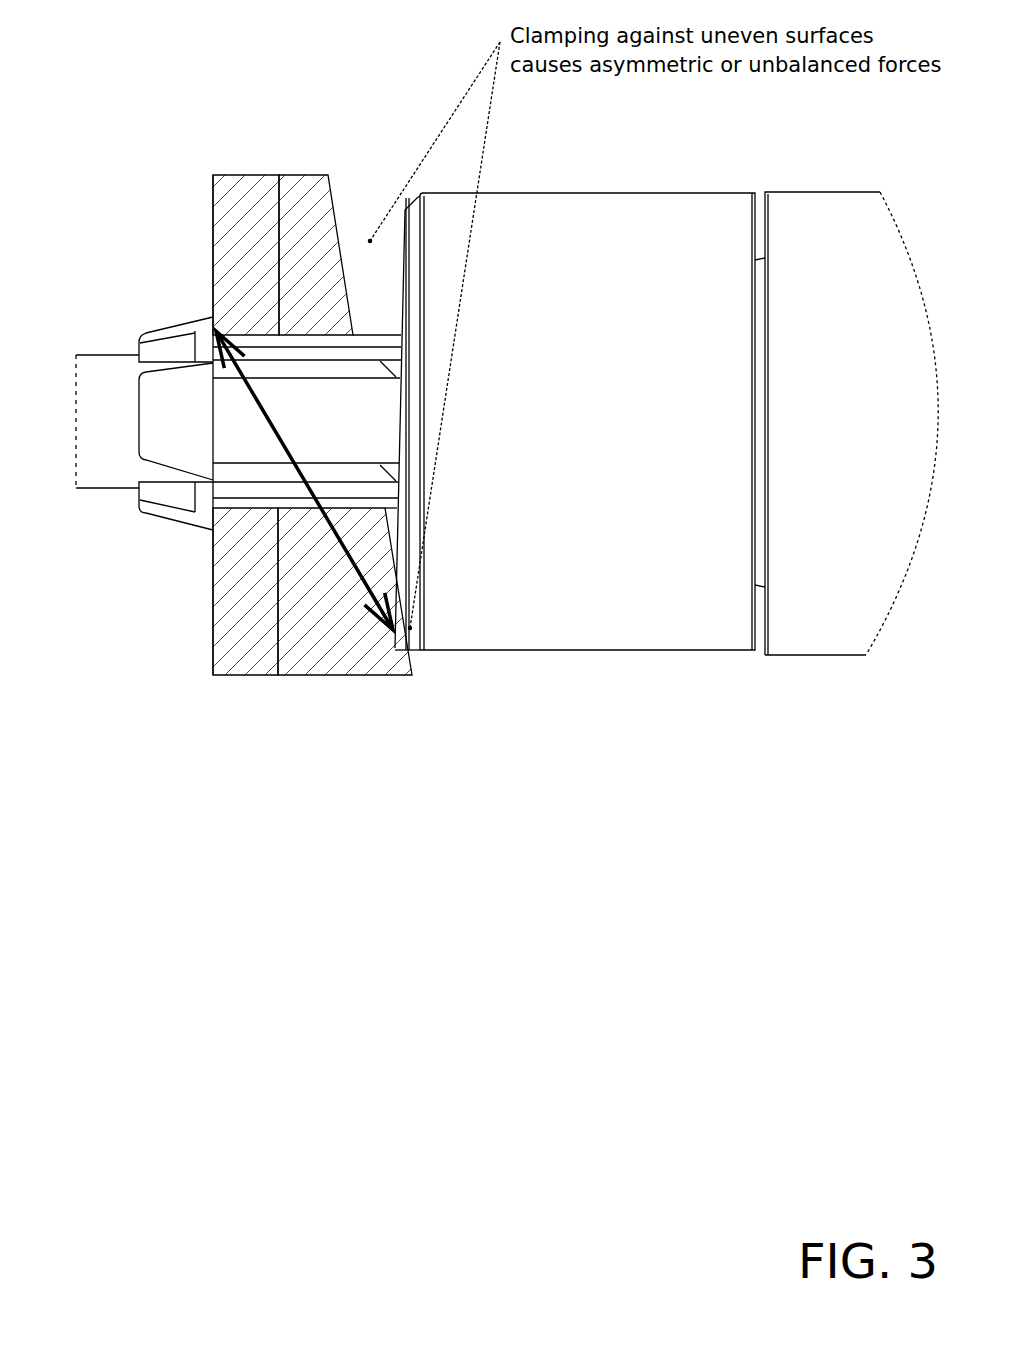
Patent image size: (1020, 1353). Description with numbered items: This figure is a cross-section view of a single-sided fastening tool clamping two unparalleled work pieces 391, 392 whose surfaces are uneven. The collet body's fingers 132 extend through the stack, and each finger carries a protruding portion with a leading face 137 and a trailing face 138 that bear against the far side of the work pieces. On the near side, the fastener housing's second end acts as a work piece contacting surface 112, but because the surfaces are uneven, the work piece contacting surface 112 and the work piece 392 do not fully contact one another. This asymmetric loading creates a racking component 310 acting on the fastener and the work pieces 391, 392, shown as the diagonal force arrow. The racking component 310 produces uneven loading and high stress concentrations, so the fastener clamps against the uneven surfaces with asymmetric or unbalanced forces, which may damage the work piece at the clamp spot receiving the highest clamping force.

The work piece contacting surface 112 is at (405, 250).
The fingers 132 is at (112, 354).
The leading face 137 is at (172, 322).
The trailing face 138 is at (214, 331).
The racking component 310 is at (333, 553).
The work piece 391 is at (240, 677).
The work piece 392 is at (373, 677).